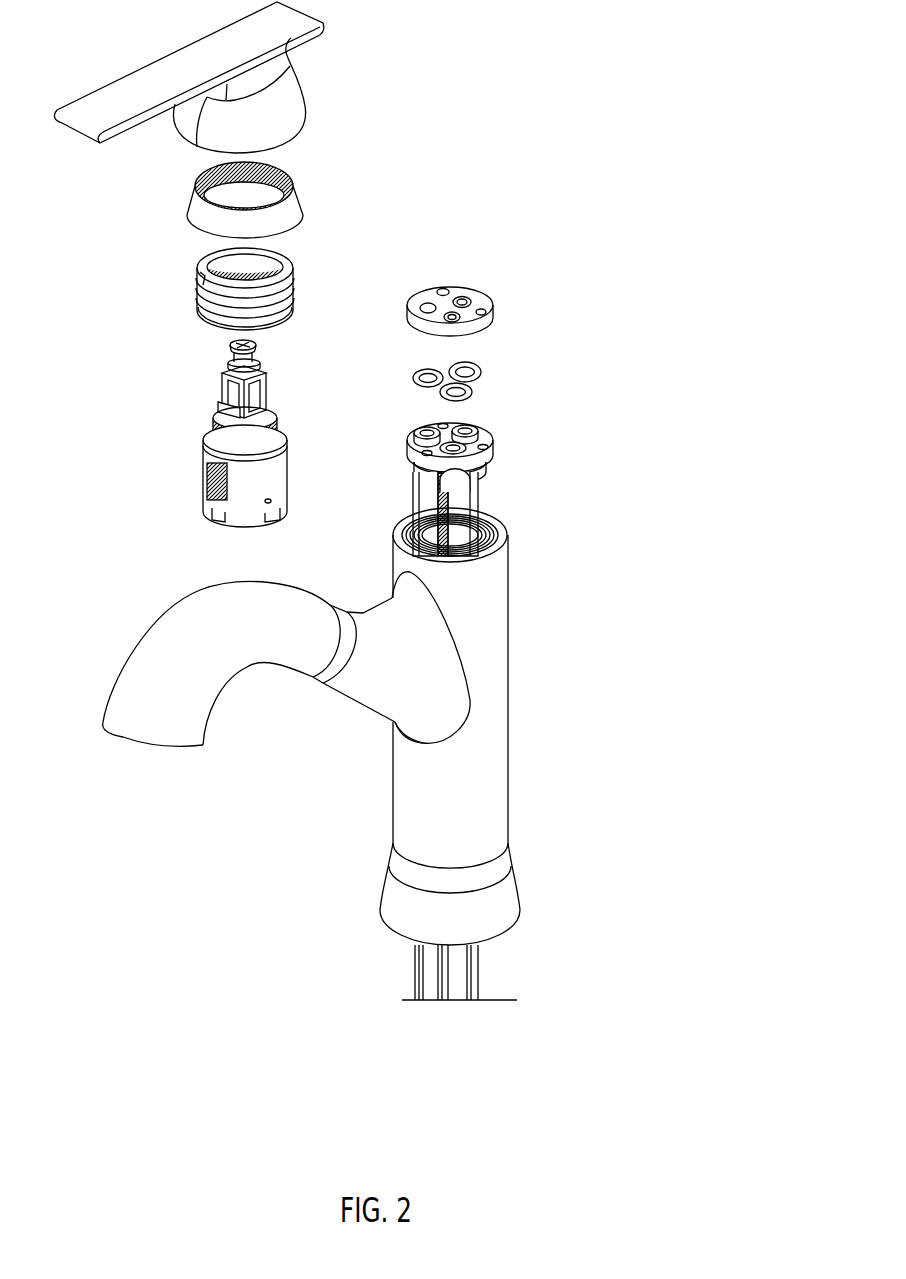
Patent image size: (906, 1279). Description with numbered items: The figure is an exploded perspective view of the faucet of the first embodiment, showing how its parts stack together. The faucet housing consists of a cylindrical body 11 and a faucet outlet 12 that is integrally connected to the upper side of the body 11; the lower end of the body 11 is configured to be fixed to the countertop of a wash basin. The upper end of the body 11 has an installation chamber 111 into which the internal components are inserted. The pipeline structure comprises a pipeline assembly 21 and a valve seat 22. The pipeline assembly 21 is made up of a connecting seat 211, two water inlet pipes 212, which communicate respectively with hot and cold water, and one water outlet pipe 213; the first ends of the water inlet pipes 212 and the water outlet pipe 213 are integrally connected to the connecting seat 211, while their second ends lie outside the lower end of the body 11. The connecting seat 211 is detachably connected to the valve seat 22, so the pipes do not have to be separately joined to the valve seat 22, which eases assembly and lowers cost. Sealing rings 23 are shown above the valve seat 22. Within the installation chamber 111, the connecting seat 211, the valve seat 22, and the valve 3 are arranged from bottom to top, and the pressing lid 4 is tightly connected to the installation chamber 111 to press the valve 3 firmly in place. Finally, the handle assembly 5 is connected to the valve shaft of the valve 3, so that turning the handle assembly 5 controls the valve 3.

The handle assembly 5 is at (282, 125).
The pressing lid 4 is at (193, 298).
The valve 3 is at (243, 485).
The valve seat 22 is at (493, 320).
The sealing rings 23 is at (481, 375).
The pipeline assembly 21 is at (490, 497).
The connecting seat 211 is at (495, 453).
The water inlet pipe 212 is at (427, 503).
The water outlet pipe 213 is at (472, 495).
The installation chamber 111 is at (500, 553).
The body 11 is at (499, 754).
The faucet outlet 12 is at (190, 665).